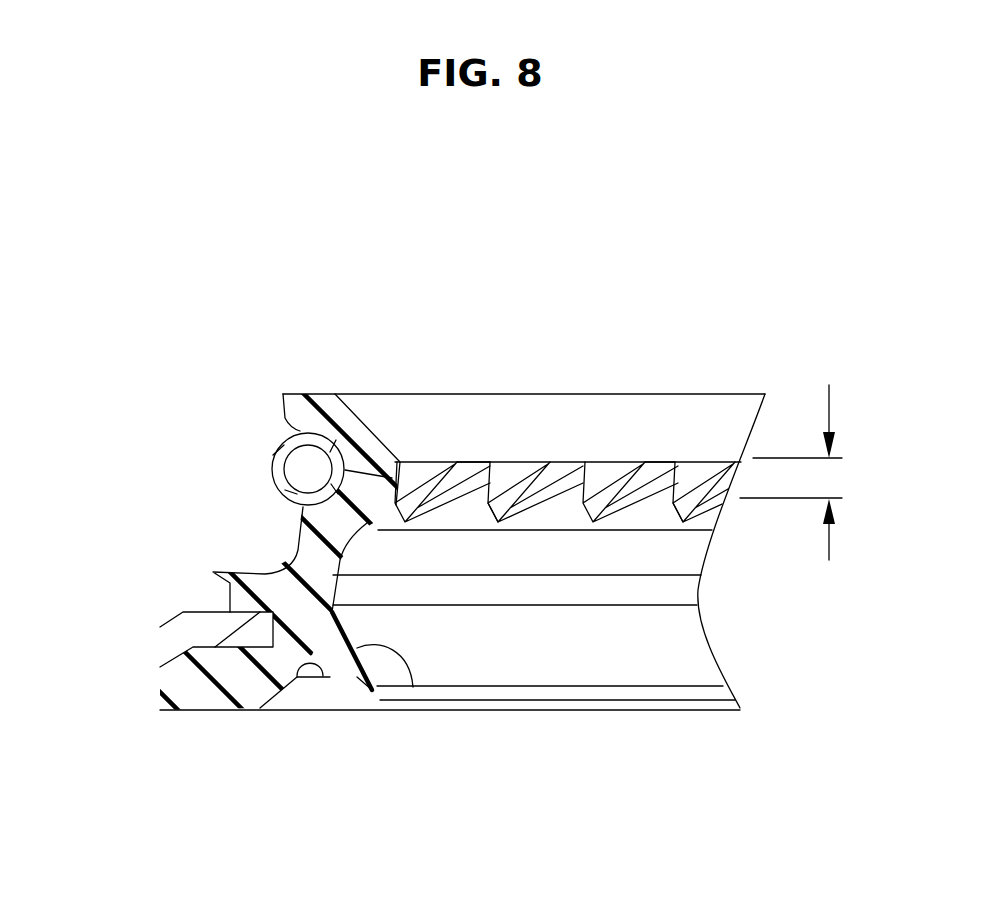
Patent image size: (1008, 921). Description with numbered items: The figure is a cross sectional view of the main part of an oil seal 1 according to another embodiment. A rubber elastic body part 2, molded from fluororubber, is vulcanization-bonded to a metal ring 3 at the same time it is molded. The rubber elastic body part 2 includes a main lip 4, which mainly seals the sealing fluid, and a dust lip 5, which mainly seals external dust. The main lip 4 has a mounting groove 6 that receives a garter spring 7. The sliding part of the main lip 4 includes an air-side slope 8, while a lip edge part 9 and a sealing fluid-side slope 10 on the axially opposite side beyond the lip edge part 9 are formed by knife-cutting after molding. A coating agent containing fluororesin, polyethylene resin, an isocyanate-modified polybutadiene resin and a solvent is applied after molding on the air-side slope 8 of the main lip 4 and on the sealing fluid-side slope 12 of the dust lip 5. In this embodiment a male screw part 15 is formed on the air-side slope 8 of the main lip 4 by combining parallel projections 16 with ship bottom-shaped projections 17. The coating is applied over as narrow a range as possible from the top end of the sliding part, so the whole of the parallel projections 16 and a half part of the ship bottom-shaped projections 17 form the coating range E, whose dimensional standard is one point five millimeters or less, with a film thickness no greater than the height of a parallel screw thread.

The oil seal 1 is at (258, 365).
The rubber elastic body part 2 is at (213, 568).
The metal ring 3 is at (162, 628).
The main lip 4 is at (383, 455).
The dust lip 5 is at (373, 690).
The mounting groove 6 is at (279, 447).
The garter spring 7 is at (275, 477).
The air-side slope 8 is at (380, 503).
The lip edge part 9 is at (405, 461).
The sealing fluid-side slope 10 is at (376, 415).
The sealing fluid-side slope 12 is at (362, 643).
The male screw part 15 is at (518, 266).
The parallel projections 16 is at (537, 462).
The ship bottom-shaped projections 17 is at (483, 462).
The coating range E is at (802, 472).